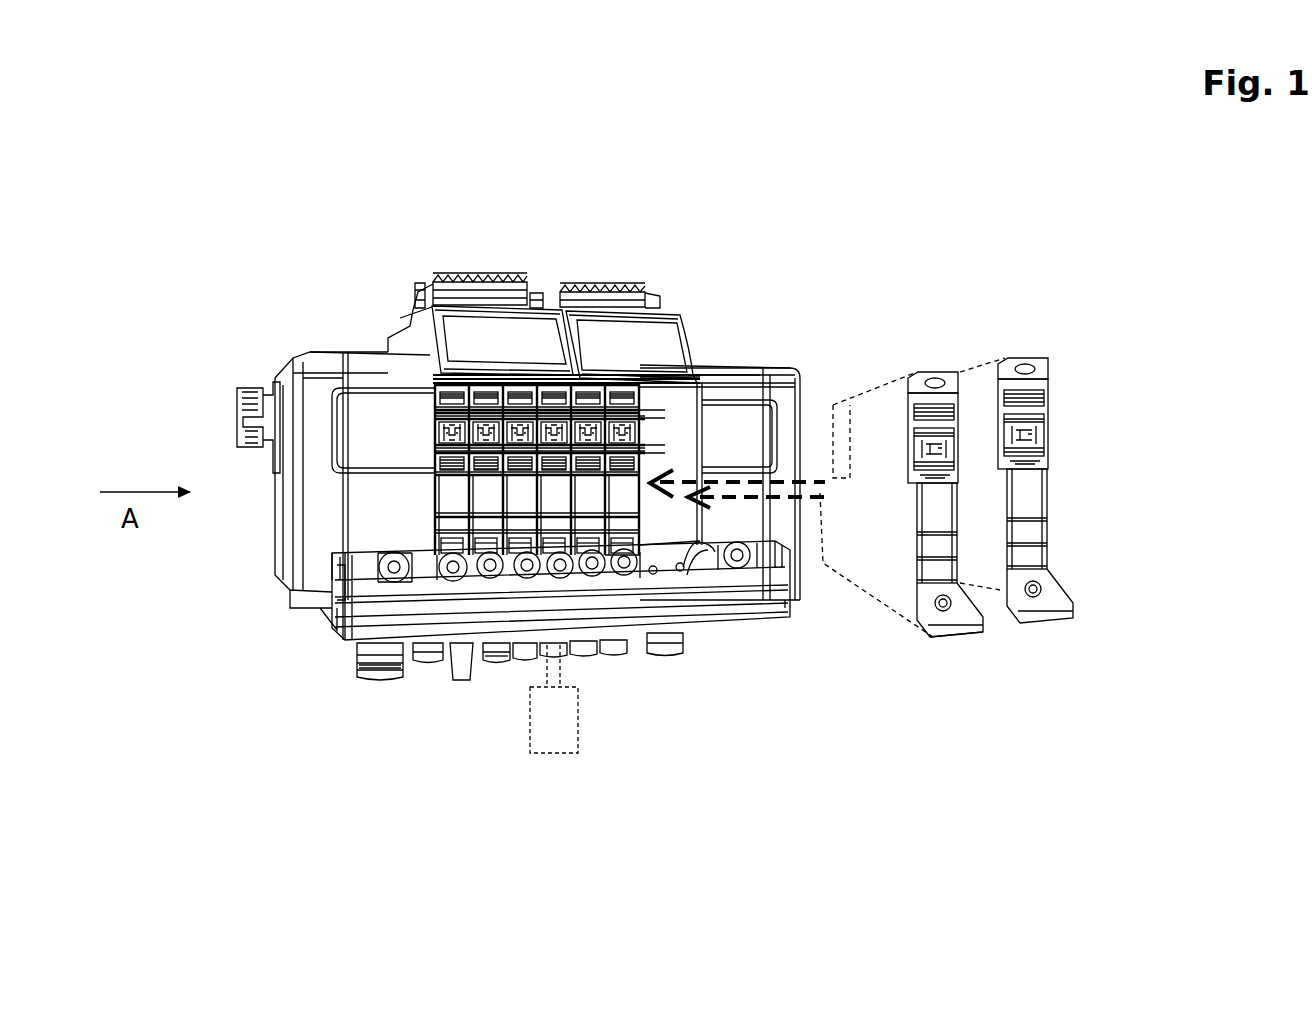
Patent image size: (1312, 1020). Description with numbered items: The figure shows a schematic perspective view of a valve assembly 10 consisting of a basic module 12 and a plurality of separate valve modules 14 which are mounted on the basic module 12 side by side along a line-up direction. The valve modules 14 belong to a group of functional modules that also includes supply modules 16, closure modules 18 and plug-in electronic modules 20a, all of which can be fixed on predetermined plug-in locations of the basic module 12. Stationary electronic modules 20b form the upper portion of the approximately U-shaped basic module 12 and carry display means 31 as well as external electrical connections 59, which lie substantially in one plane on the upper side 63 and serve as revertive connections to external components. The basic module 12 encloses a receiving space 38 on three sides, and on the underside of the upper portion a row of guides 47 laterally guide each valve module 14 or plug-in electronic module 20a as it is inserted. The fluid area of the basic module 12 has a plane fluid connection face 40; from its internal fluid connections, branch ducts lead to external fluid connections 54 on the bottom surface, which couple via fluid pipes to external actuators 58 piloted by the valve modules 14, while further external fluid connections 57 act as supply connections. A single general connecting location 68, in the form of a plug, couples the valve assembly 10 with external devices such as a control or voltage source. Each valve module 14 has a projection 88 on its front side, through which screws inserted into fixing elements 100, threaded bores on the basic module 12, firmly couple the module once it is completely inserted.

The valve assembly 10 is at (240, 285).
The basic module 12 is at (670, 581).
The valve modules 14 is at (457, 540).
The supply modules 16 is at (727, 418).
The closure modules 18 is at (331, 365).
The plug-in electronic modules 20a is at (640, 563).
The stationary electronic modules 20b is at (547, 343).
The display means 31 is at (457, 325).
The receiving space 38 is at (710, 365).
The fluid connection face 40 is at (708, 548).
The guides 47 is at (656, 385).
The external fluid connections 54 is at (507, 657).
The further external fluid connections 57 is at (380, 660).
The external actuators 58 is at (554, 699).
The external electrical connections 59 is at (481, 282).
The upper side 63 is at (667, 424).
The general connecting location 68 is at (244, 387).
The projection 88 is at (955, 612).
The fixing elements 100 is at (676, 547).